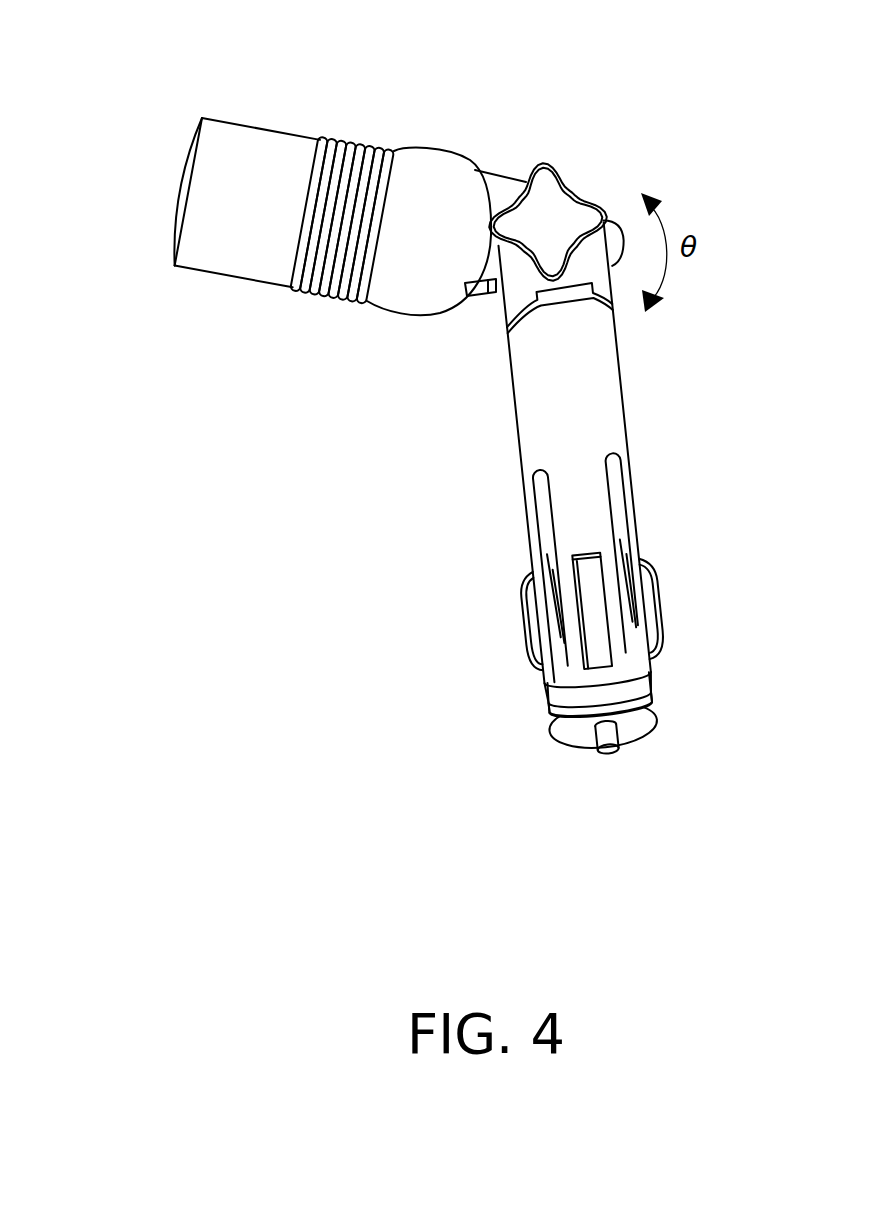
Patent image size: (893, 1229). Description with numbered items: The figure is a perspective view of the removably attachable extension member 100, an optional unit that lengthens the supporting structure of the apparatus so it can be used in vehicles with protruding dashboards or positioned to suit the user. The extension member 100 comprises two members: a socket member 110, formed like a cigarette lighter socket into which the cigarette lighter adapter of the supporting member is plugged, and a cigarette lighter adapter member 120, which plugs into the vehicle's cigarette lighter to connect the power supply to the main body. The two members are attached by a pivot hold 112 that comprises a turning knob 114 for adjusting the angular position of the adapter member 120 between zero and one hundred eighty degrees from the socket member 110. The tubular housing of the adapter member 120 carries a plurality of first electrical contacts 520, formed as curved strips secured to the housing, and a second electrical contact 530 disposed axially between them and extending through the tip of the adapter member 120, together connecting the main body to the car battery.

The extension member 100 is at (224, 108).
The socket member 110 is at (294, 293).
The pivot hold 112 is at (488, 297).
The turning knob 114 is at (588, 180).
The cigarette lighter adapter member 120 is at (508, 648).
The first electrical contacts 520 is at (590, 573).
The second electrical contact 530 is at (612, 758).